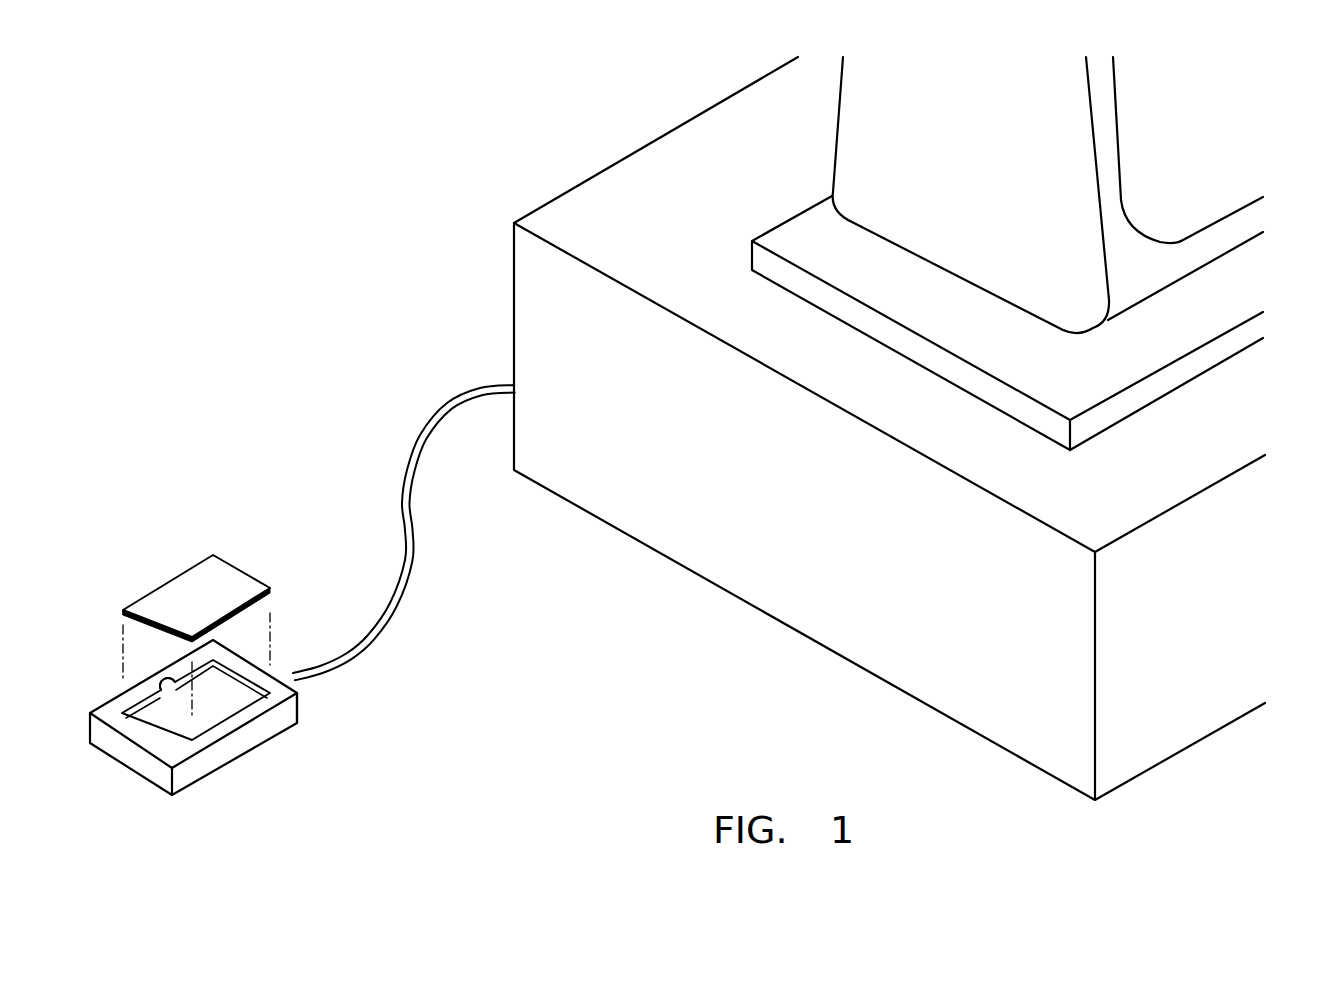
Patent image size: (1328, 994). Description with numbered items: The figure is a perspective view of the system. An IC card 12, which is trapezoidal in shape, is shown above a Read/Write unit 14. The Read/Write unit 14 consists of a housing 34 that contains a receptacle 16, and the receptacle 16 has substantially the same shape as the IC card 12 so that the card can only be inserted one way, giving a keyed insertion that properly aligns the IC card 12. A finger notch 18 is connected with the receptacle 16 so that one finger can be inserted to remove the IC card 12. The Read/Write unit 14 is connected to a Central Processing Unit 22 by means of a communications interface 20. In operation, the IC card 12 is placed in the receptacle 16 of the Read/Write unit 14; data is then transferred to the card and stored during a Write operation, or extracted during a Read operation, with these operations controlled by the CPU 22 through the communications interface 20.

The IC card 12 is at (180, 590).
The Read/Write unit 14 is at (173, 780).
The receptacle 16 is at (232, 698).
The finger notch 18 is at (153, 687).
The communications interface 20 is at (408, 572).
The Central Processing Unit (CPU) 22 is at (770, 620).
The housing 34 is at (293, 722).